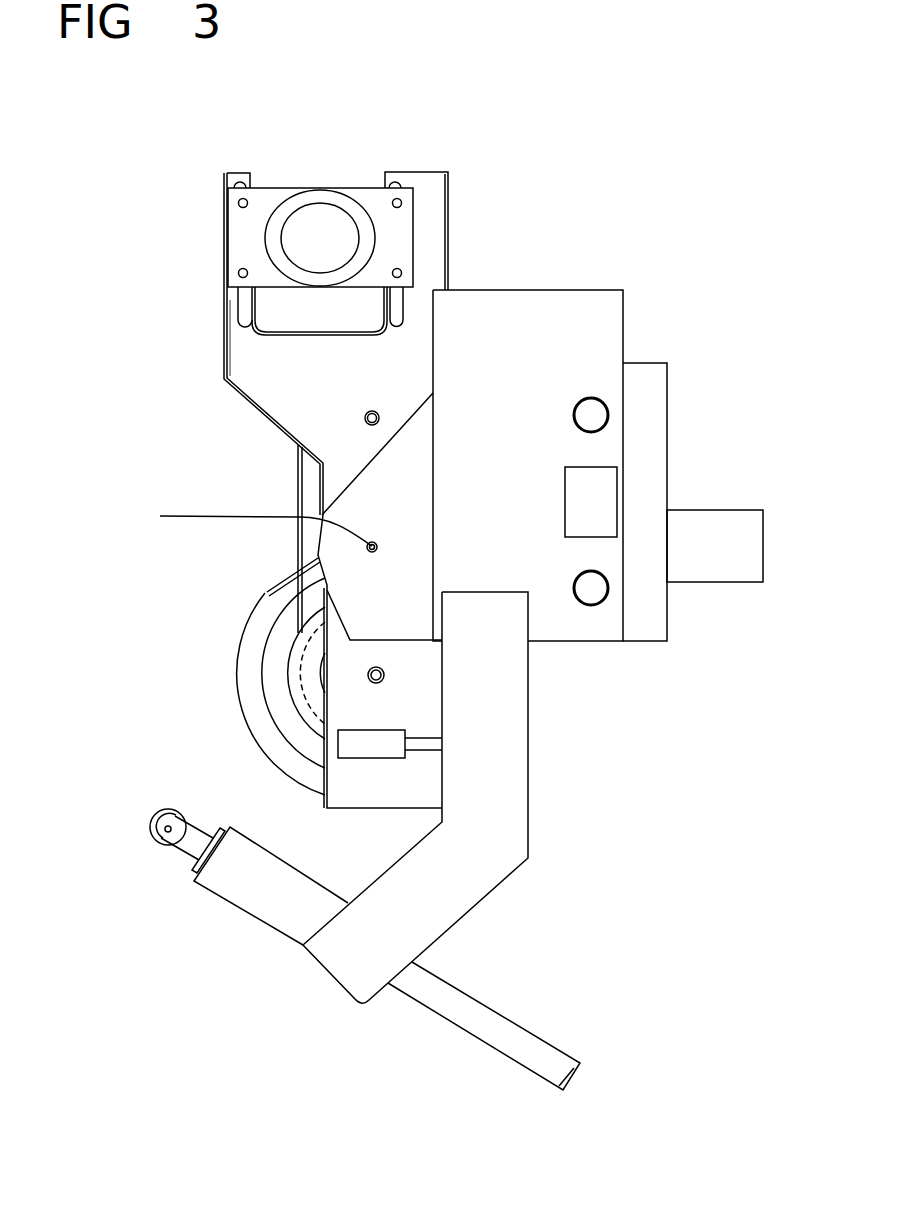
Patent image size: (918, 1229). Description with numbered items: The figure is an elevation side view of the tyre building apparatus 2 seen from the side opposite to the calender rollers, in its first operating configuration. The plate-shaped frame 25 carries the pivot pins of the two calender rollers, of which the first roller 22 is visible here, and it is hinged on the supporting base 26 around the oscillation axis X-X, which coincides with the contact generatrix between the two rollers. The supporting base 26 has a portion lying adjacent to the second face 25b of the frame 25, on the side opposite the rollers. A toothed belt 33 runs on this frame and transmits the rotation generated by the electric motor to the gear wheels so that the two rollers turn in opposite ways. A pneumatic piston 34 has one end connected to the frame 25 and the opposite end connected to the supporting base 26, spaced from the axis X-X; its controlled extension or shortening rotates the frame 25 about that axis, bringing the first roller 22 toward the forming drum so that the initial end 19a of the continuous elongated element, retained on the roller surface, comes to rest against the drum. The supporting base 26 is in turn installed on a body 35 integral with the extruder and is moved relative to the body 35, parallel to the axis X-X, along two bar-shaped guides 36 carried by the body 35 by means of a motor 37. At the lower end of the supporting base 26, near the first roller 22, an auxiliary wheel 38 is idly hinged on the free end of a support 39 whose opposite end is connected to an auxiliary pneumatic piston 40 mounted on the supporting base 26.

The apparatus 2 is at (146, 240).
The initial end 19a is at (270, 592).
The first roller 22 is at (297, 763).
The frame 25 is at (452, 191).
The second face 25b is at (293, 378).
The supporting base 26 is at (607, 284).
The toothed belt 33 is at (318, 192).
The pneumatic piston 34 is at (377, 742).
The body 35 is at (678, 380).
The guides 36 is at (591, 588).
The motor 37 is at (583, 512).
The auxiliary wheel 38 is at (190, 842).
The support 39 is at (190, 842).
The auxiliary pneumatic piston 40 is at (513, 1033).